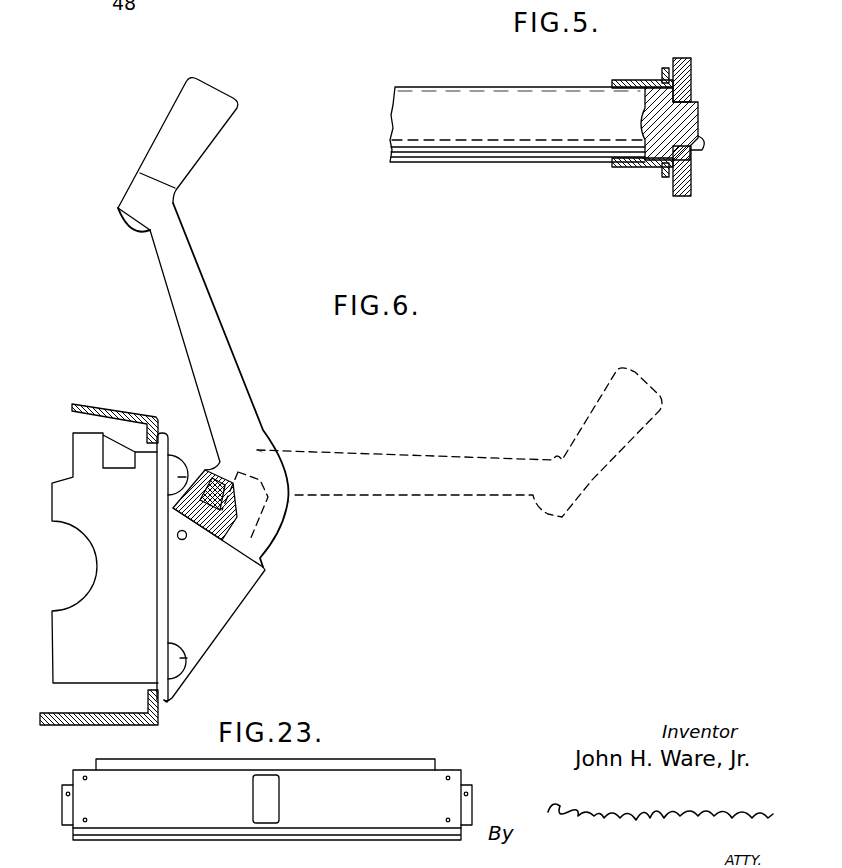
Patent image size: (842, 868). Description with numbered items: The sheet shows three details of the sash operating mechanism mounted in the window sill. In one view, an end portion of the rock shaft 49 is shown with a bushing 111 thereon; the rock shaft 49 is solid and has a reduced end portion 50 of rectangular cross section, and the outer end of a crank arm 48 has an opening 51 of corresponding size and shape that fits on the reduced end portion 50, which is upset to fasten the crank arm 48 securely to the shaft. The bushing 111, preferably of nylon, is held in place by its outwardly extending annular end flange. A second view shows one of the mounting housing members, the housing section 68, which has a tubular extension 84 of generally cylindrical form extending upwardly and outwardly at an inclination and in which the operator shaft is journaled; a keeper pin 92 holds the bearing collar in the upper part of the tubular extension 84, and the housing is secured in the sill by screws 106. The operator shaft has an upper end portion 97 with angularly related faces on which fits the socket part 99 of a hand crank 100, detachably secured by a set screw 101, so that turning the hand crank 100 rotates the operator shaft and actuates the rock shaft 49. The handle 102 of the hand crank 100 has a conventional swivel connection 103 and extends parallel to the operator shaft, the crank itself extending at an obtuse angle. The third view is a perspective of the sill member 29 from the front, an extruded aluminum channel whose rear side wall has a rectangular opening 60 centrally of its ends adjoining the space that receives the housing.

In FIG. 5, the crank arm 48 is at (688, 78).
In FIG. 5, the rock shaft 49 is at (543, 143).
In FIG. 5, the reduced end portion 50 is at (700, 123).
In FIG. 5, the opening 51 is at (703, 140).
In FIG. 5, the bushing 111 is at (637, 170).
In FIG. 6, the hand crank 100 is at (200, 278).
In FIG. 6, the handle 102 is at (180, 128).
In FIG. 6, the swivel connection 103 is at (120, 223).
In FIG. 6, the set screw 101 is at (204, 527).
In FIG. 6, the upper end portion 97 is at (282, 480).
In FIG. 6, the socket part 99 is at (311, 527).
In FIG. 6, the tubular extension 84 is at (225, 615).
In FIG. 6, the housing section 68 is at (65, 648).
In FIG. 6, the keeper pin 92 is at (177, 537).
In FIG. 6, the screw 106 is at (181, 667).
In FIG. 6, the sill member 29 is at (84, 733).
In FIG. 23, the sill member 29 is at (379, 756).
In FIG. 23, the opening 60 is at (275, 798).